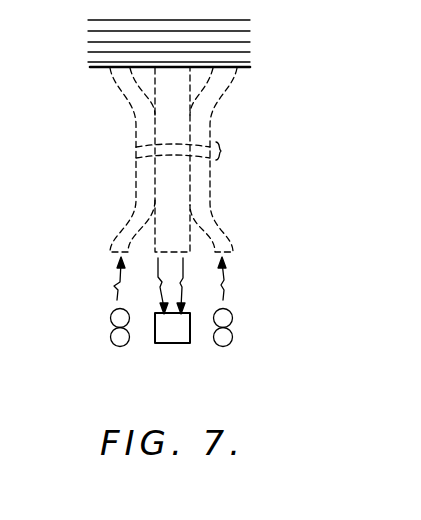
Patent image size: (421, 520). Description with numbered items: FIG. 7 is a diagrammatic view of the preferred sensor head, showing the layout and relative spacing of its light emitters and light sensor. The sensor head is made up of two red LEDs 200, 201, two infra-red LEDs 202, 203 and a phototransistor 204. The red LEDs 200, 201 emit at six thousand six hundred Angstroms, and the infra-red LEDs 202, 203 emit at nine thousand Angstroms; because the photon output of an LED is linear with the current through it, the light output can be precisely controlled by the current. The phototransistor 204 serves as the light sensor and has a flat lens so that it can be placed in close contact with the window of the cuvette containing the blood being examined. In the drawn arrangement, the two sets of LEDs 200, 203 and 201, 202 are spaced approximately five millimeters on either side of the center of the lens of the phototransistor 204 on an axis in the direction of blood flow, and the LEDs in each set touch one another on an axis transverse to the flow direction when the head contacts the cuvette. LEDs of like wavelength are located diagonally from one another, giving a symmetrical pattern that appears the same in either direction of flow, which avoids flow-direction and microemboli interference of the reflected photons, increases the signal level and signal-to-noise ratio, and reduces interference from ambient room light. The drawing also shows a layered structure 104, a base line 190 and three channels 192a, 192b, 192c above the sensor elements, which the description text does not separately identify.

The layered structure 104 is at (248, 38).
The base line / interface 190 is at (243, 68).
The left channel 192a is at (136, 194).
The right channel 192b is at (210, 198).
The middle channel 192c is at (190, 242).
The red LED 200 is at (110, 315).
The infra-red LED 203 is at (111, 338).
The infra-red LED 202 is at (232, 317).
The red LED 201 is at (232, 337).
The phototransistor 204 is at (170, 343).